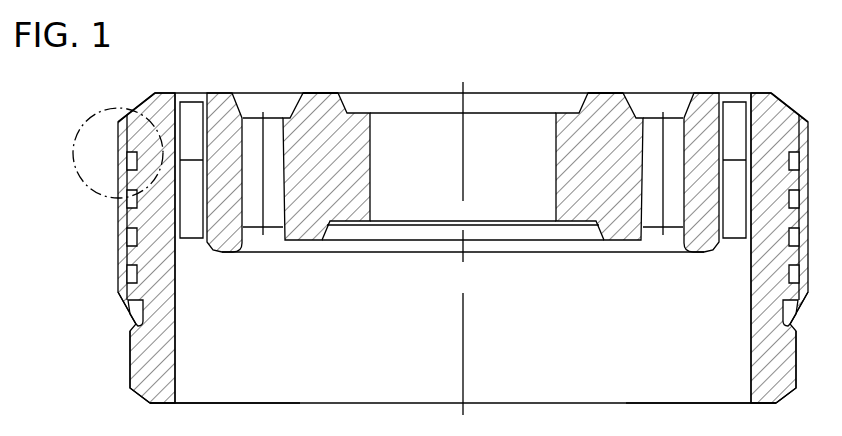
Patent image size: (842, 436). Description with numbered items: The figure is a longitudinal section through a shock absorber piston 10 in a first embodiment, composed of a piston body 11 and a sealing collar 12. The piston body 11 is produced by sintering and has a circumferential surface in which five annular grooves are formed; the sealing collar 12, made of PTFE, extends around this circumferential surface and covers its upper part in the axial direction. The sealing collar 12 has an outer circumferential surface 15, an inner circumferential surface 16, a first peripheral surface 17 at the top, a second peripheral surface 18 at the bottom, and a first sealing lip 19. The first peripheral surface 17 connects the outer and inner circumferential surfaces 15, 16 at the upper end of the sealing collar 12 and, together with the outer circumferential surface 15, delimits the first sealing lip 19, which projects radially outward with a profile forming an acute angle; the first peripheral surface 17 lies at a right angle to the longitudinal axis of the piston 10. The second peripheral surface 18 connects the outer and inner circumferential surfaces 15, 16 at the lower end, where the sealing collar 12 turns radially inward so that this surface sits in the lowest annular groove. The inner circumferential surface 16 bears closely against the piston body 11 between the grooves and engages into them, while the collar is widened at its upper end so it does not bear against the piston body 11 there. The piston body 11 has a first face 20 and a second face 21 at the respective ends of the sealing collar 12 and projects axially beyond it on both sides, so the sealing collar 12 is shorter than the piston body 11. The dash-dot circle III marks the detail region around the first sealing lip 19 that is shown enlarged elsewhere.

The piston 10 is at (424, 226).
The piston body 11 is at (474, 142).
The sealing collar 12 is at (424, 237).
The outer circumferential surface 15 is at (120, 258).
The inner circumferential surface 16 is at (143, 243).
The first peripheral surface 17 is at (118, 122).
The second peripheral surface 18 is at (150, 326).
The first sealing lip 19 is at (117, 124).
The first face 20 is at (328, 92).
The second face 21 is at (270, 404).
The detail III is at (88, 188).